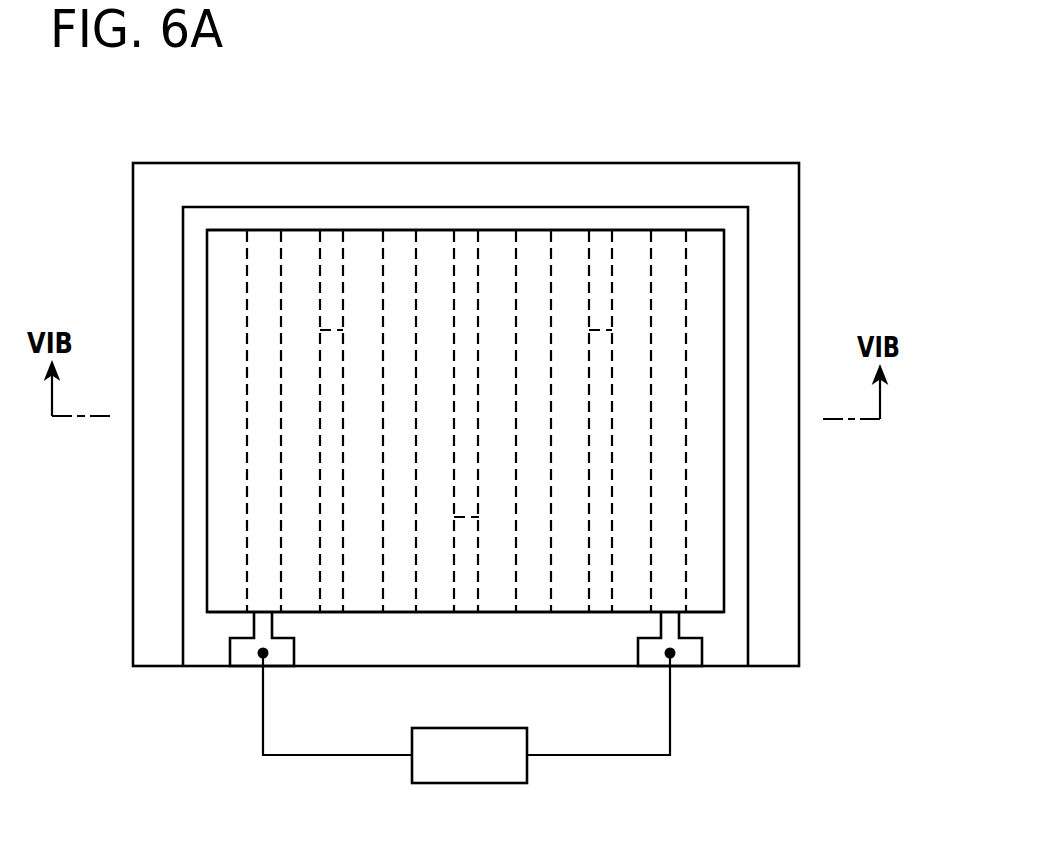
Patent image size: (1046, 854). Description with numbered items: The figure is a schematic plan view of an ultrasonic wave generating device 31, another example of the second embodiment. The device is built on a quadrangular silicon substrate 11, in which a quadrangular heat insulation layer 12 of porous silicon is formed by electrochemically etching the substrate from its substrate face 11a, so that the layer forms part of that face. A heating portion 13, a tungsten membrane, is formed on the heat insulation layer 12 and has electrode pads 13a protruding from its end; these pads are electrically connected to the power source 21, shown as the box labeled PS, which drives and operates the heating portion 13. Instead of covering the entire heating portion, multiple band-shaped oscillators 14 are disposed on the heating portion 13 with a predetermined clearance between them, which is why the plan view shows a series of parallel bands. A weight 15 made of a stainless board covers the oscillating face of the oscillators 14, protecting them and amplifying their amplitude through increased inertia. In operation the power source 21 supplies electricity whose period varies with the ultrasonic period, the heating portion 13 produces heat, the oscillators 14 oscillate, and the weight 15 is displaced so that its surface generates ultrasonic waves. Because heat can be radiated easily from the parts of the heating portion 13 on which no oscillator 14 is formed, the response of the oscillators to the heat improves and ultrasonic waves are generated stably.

The ultrasonic wave generating device 31 is at (751, 143).
The substrate face 11a is at (166, 175).
The substrate 11 is at (213, 165).
The heat insulation layer 12 is at (330, 218).
The heating portion 13 is at (603, 252).
The electrode pads 13a is at (243, 662).
The oscillator 14 is at (295, 240).
The weight 15 is at (466, 232).
The power source 21 is at (498, 728).